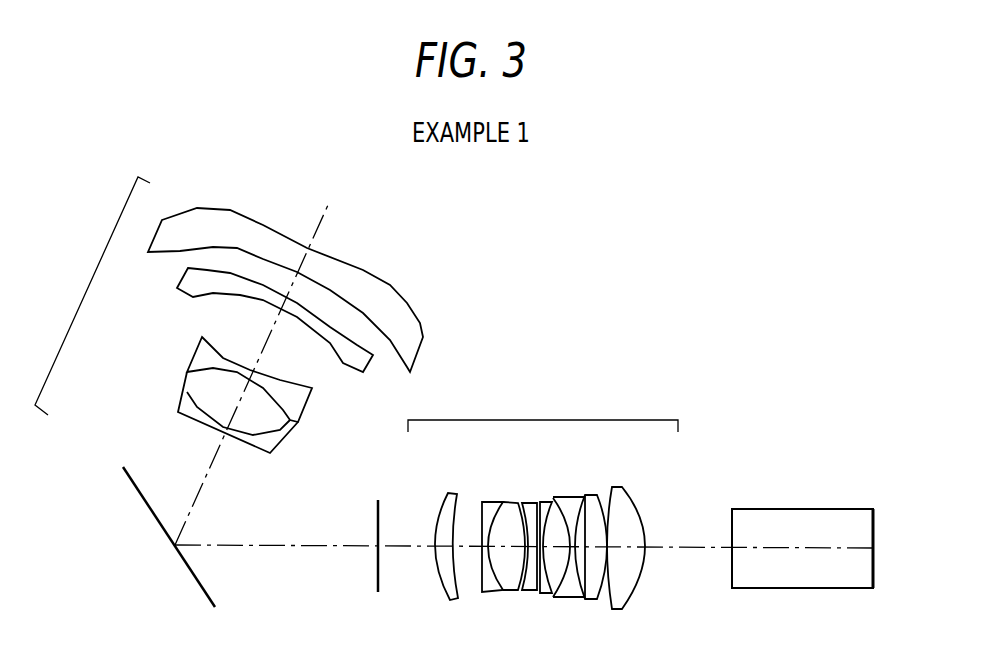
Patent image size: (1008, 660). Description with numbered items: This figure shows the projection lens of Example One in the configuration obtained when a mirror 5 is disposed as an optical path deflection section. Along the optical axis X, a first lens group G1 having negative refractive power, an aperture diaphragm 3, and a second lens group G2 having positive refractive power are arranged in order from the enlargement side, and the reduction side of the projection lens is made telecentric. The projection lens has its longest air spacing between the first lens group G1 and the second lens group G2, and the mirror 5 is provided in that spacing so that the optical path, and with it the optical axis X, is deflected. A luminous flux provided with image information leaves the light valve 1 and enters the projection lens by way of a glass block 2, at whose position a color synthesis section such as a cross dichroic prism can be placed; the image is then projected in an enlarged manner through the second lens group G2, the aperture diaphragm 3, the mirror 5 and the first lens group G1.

The light valve 1 is at (875, 532).
The glass block 2 is at (772, 517).
The aperture diaphragm 3 is at (378, 575).
The mirror 5 is at (133, 490).
The first lens group G1 is at (229, 315).
The second lens group G2 is at (543, 500).
The optical axis X is at (690, 548).